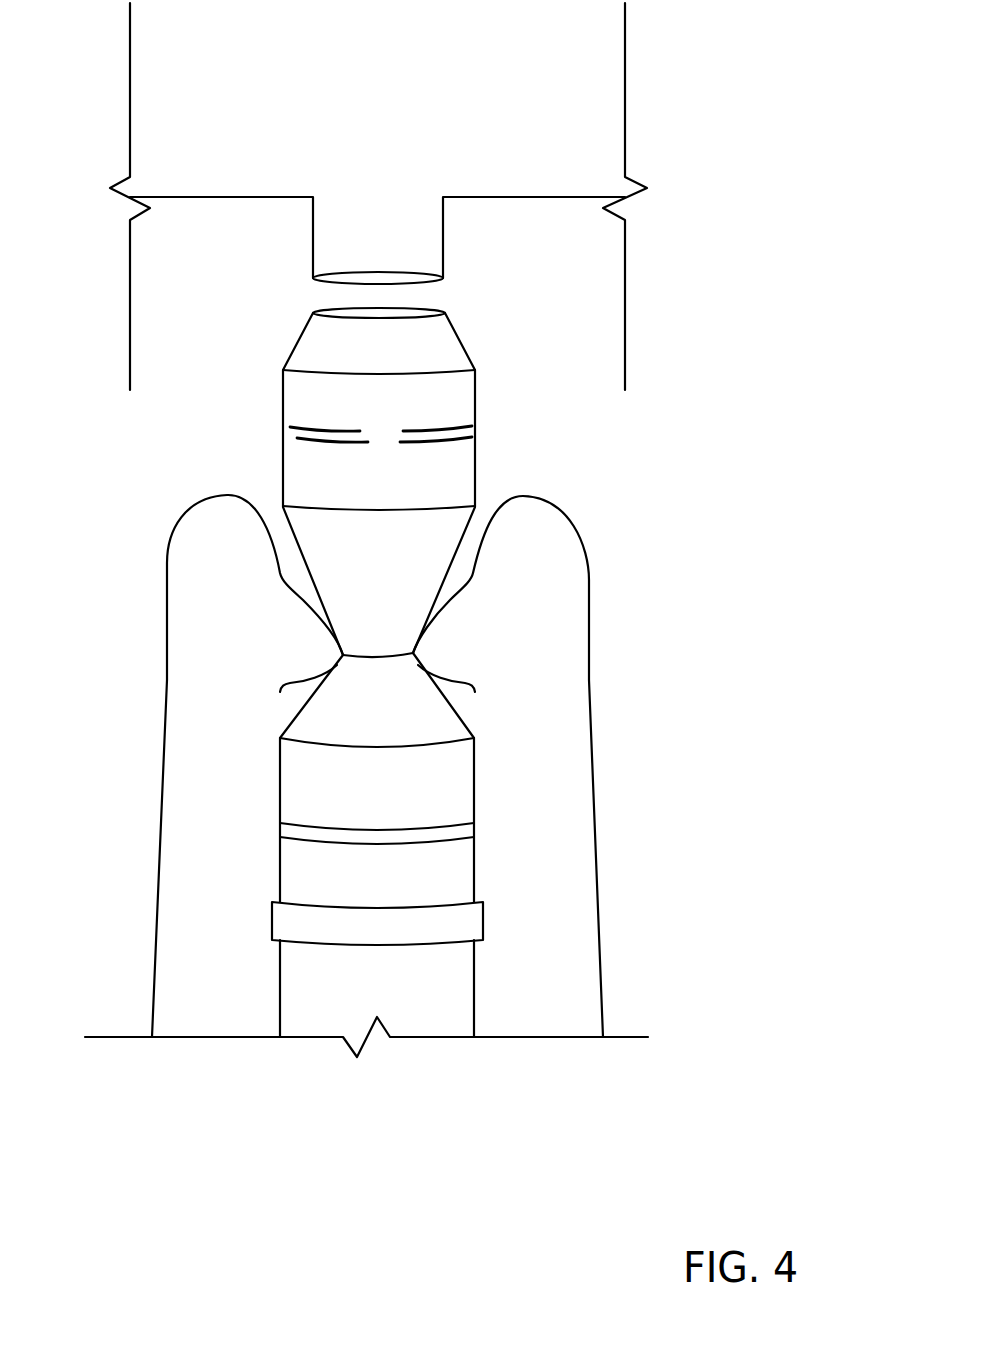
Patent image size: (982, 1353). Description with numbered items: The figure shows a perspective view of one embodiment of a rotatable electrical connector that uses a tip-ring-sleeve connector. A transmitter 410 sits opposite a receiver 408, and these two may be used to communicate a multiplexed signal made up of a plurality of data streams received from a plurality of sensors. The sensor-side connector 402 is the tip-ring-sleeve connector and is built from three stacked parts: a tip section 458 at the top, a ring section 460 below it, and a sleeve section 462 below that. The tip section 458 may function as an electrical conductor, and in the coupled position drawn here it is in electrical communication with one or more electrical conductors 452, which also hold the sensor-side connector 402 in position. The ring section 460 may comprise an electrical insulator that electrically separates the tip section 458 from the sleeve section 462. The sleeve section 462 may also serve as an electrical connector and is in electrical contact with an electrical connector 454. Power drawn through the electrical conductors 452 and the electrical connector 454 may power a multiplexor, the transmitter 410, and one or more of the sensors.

The sensor-side connector 402 is at (391, 651).
The receiver 408 is at (380, 277).
The transmitter 410 is at (377, 315).
The electrical conductors 452 is at (165, 633).
The electrical connector 454 is at (397, 907).
The tip section 458 is at (282, 433).
The ring section 460 is at (395, 830).
The sleeve section 462 is at (280, 865).